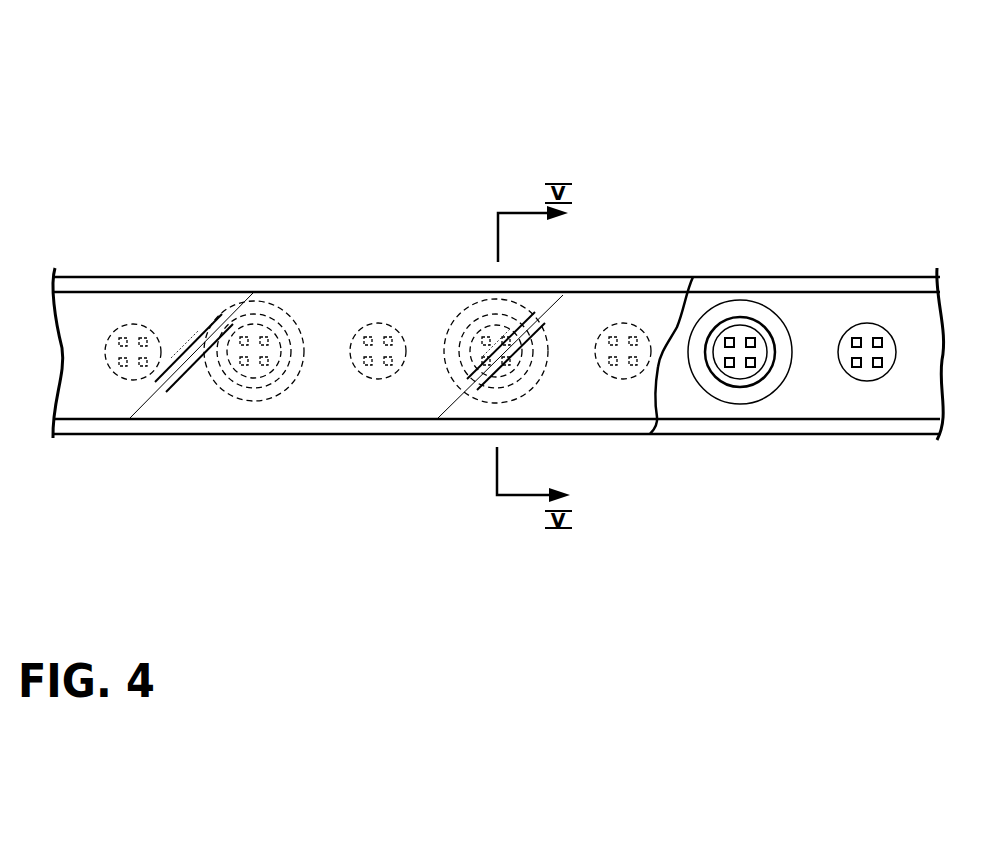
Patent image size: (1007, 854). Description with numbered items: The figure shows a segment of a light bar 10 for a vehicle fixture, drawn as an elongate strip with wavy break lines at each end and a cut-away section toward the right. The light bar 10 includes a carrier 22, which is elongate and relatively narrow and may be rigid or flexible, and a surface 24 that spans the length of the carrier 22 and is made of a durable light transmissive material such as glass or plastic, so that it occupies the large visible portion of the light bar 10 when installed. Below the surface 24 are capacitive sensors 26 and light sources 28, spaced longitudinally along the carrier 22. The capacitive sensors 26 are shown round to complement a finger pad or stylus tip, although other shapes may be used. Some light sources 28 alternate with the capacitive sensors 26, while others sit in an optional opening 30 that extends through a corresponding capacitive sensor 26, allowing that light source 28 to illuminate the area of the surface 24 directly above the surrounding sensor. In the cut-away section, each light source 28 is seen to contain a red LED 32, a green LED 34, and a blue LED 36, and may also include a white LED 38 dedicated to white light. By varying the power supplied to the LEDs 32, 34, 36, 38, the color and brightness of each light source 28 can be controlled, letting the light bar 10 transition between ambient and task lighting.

The light bar 10 is at (853, 140).
The carrier 22 is at (211, 277).
The surface 24 is at (330, 322).
The capacitive sensor 26 is at (221, 388).
The light source 28 is at (133, 322).
The opening 30 is at (207, 352).
The red LED 32 is at (752, 337).
The green LED 34 is at (730, 368).
The blue LED 36 is at (751, 368).
The white LED 38 is at (727, 337).